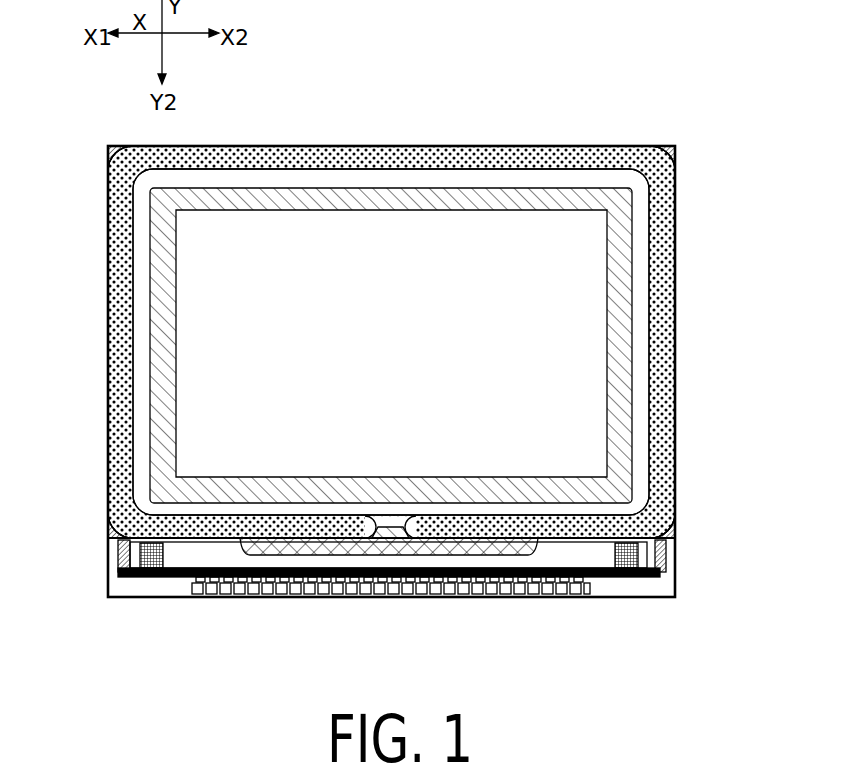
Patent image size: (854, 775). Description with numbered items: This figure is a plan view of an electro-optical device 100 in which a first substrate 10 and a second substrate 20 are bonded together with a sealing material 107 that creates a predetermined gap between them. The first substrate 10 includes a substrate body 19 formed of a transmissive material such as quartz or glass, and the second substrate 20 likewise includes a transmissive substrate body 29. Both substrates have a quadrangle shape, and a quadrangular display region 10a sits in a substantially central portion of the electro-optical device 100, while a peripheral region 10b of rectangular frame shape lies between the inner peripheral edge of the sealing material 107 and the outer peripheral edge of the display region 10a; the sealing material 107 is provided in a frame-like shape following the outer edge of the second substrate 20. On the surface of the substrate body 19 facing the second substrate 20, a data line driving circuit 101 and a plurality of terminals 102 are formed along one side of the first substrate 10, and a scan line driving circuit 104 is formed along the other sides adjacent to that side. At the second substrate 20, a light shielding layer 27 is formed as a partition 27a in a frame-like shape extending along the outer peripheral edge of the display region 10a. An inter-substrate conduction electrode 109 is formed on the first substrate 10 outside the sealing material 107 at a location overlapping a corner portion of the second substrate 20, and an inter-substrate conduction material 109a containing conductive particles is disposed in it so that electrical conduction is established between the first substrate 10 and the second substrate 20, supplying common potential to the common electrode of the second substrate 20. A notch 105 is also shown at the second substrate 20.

The electro-optical device 100 is at (602, 120).
The first substrate 10 is at (391, 405).
The substrate body 19 is at (165, 598).
The display region 10a is at (399, 350).
The peripheral region 10b is at (697, 347).
The second substrate 20 is at (369, 598).
The substrate body 29 is at (228, 542).
The light shielding layer 27 is at (465, 345).
The partition 27a is at (705, 238).
The data line driving circuit 101 is at (592, 557).
The terminals 102 is at (396, 585).
The scan line driving circuit 104 is at (143, 417).
The notch 105 is at (402, 530).
The sealing material 107 is at (605, 296).
The inter-substrate conduction electrode 109 is at (121, 147).
The inter-substrate conduction material 109a is at (114, 162).